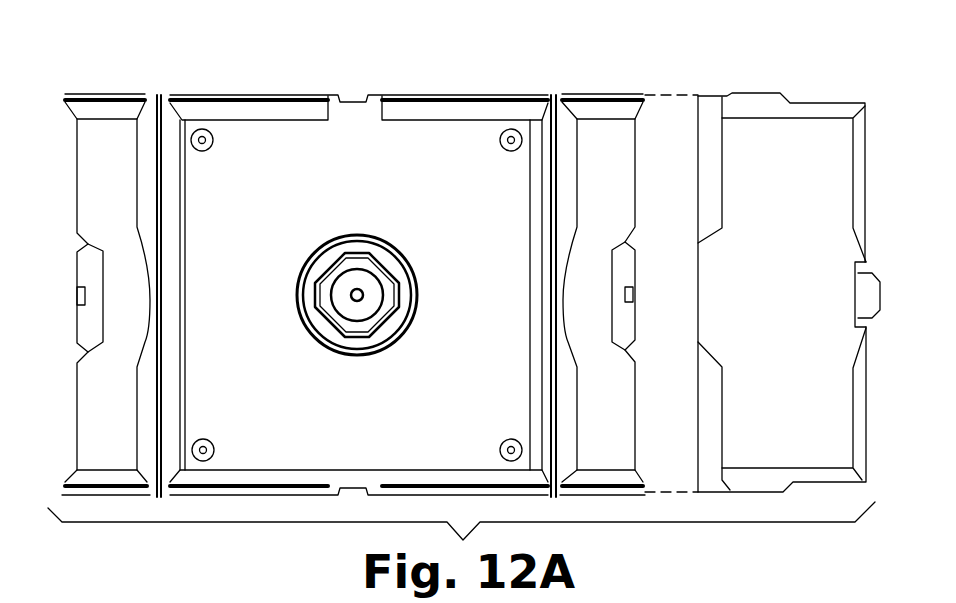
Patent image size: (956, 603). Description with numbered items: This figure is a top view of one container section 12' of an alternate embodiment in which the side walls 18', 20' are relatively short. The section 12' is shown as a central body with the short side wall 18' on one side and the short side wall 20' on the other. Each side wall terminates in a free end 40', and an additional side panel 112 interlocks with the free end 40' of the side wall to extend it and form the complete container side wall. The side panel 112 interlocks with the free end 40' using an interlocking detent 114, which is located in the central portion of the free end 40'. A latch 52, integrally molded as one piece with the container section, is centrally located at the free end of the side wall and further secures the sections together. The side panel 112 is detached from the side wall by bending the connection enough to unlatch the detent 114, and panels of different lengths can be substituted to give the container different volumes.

The side wall 18' is at (118, 262).
The section 12' is at (359, 269).
The side wall 20' is at (627, 265).
The free end 40' is at (661, 155).
The side panel 112 is at (830, 138).
The detent 114 is at (634, 294).
The latch 52 is at (858, 293).